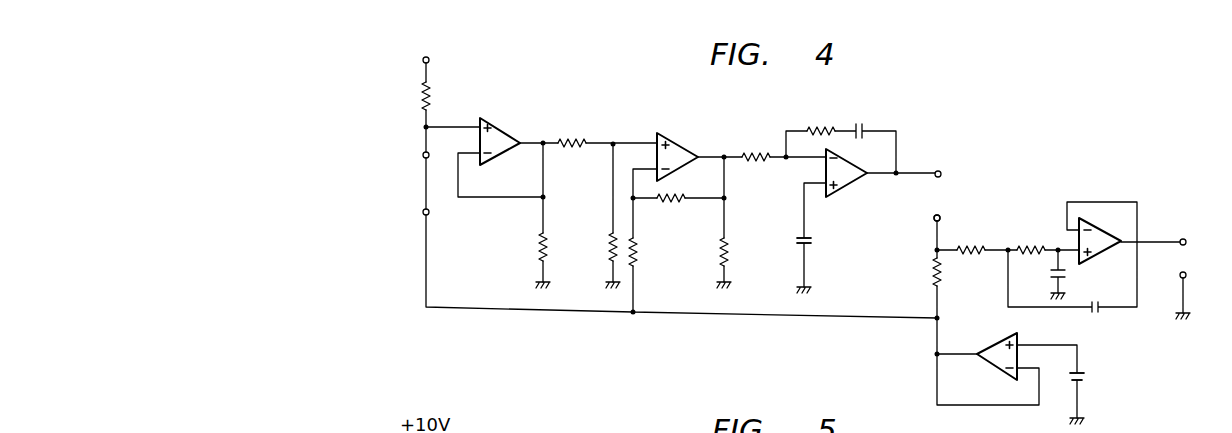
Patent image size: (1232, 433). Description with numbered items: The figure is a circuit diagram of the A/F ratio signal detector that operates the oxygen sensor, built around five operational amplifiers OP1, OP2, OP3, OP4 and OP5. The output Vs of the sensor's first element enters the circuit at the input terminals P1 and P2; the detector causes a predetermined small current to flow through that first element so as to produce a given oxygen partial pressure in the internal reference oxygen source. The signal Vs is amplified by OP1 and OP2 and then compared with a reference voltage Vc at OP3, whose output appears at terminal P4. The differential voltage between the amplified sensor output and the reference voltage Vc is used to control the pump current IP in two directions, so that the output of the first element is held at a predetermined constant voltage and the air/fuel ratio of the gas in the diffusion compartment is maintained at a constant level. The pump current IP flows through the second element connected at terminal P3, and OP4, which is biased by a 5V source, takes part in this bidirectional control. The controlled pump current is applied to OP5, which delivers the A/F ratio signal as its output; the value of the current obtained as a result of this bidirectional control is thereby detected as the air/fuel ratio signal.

The terminal P1 is at (413, 156).
The output of the first element Vs is at (425, 183).
The terminal P2 is at (411, 211).
The operational amplifier OP1 is at (501, 128).
The operational amplifier OP2 is at (679, 145).
The operational amplifier OP3 is at (850, 184).
The terminal P4 is at (934, 162).
The reference voltage Vc is at (818, 246).
The pump current IP is at (936, 205).
The terminal P3 is at (950, 222).
The operational amplifier OP4 is at (997, 342).
The operational amplifier OP5 is at (1103, 253).
The 5V reference source 5V is at (1093, 380).